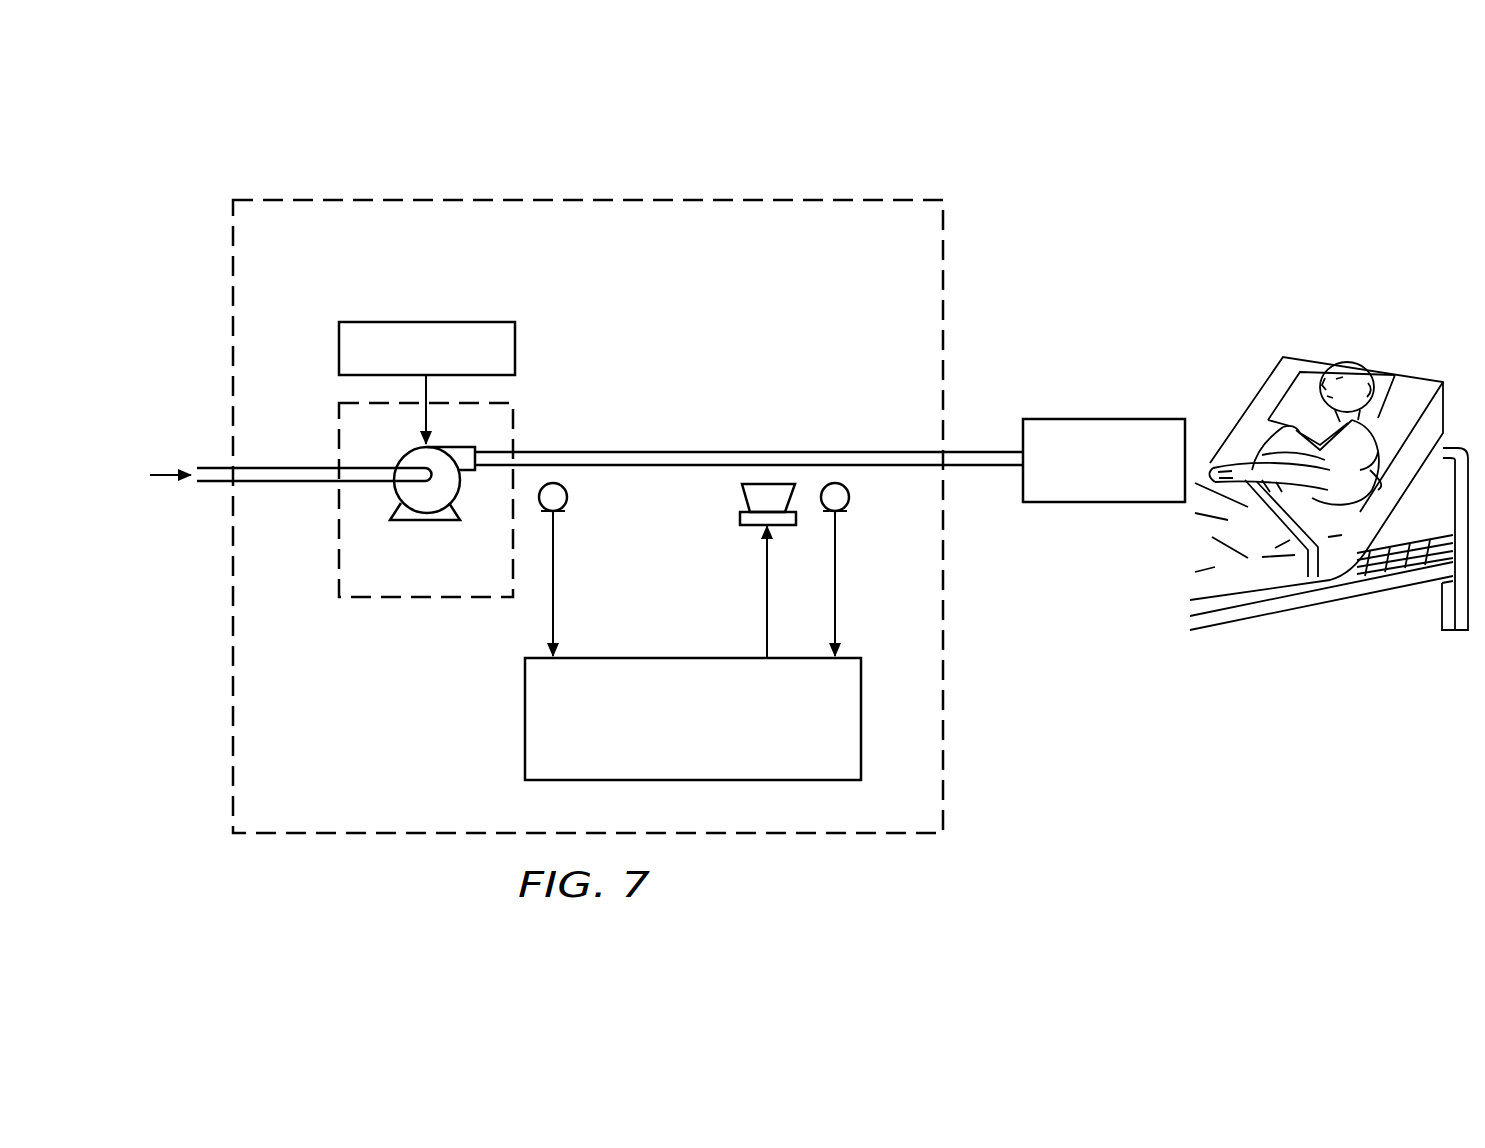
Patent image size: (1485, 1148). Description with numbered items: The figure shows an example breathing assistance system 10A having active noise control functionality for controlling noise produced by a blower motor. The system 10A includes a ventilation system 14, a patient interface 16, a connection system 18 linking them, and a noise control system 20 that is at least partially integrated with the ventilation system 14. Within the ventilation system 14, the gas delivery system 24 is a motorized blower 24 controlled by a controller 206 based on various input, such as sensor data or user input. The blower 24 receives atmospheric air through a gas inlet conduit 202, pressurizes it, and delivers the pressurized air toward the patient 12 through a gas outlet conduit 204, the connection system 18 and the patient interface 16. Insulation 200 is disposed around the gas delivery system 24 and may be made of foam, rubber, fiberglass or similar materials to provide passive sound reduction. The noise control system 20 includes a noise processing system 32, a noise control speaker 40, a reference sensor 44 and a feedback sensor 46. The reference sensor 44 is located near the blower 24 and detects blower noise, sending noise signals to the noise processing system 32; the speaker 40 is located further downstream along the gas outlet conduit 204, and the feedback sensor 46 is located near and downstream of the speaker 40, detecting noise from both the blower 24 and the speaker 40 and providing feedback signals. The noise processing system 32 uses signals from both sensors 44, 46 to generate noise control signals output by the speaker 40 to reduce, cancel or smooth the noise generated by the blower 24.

The breathing assistance system 10A is at (1027, 168).
The patient 12 is at (1357, 362).
The ventilation system 14 is at (336, 197).
The patient interface 16 is at (1111, 418).
The connection system 18 is at (976, 450).
The noise control system 20 is at (450, 688).
The gas delivery system 24 is at (420, 523).
The noise processing system 32 is at (525, 720).
The noise control speaker 40 is at (742, 497).
The reference sensor 44 is at (566, 500).
The feedback sensor 46 is at (848, 500).
The insulation 200 is at (395, 600).
The gas inlet conduit 202 is at (298, 468).
The gas outlet conduit 204 is at (795, 450).
The controller 206 is at (378, 320).